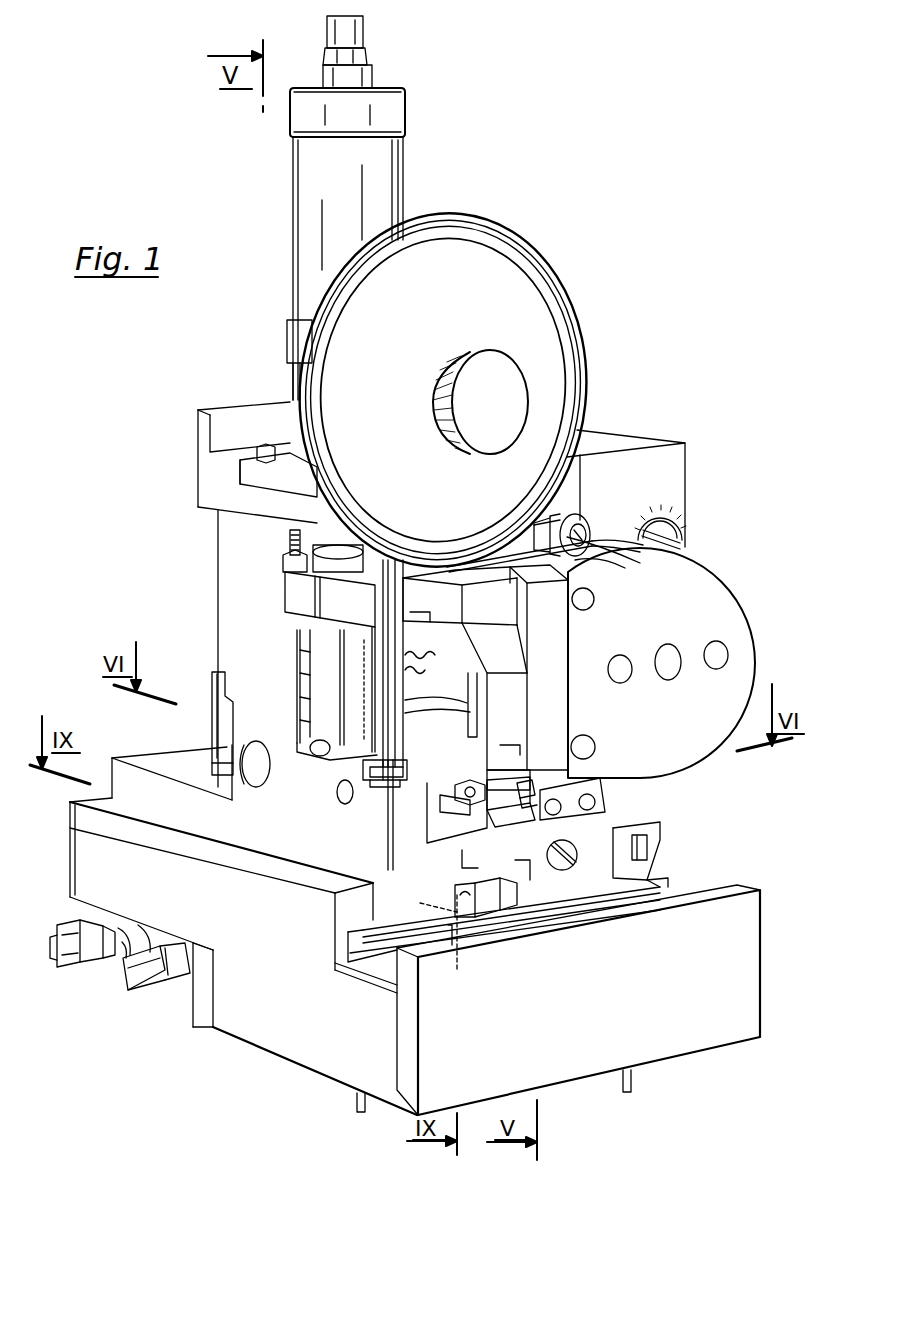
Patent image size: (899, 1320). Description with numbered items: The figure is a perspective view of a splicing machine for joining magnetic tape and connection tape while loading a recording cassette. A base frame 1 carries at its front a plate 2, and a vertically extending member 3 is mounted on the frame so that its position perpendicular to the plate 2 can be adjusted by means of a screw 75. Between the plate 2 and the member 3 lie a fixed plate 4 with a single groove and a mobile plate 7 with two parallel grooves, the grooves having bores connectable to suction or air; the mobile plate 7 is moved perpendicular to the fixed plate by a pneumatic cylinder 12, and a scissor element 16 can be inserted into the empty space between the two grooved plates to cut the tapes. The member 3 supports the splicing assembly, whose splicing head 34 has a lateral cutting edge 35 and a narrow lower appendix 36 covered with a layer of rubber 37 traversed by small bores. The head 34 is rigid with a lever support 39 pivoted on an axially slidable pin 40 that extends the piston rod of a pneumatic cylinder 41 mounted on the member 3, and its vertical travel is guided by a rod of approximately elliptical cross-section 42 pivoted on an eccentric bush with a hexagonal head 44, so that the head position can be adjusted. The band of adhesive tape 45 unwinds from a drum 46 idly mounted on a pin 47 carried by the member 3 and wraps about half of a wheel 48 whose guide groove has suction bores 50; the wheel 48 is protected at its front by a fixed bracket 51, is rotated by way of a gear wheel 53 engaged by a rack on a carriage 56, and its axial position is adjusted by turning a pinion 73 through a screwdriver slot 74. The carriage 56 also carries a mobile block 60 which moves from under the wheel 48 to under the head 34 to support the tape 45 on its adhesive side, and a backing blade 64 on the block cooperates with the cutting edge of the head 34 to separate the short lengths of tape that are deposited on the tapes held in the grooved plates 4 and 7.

The base frame 1 is at (325, 1062).
The plate 2 is at (745, 958).
The vertically extending member 3 is at (233, 563).
The fixed plate 4 is at (667, 890).
The mobile plate 7 is at (362, 978).
The pneumatic cylinder 12 is at (120, 985).
The scissor element 16 is at (458, 898).
The splicing head 34 is at (530, 693).
The lateral cutting edge 35 is at (525, 795).
The narrow lower appendix 36 is at (492, 778).
The layer of rubber 37 is at (500, 790).
The lever support 39 is at (503, 600).
The axially slidable pin 40 is at (330, 676).
The pneumatic cylinder 41 is at (387, 170).
The rod of approximately elliptical cross-section 42 is at (395, 648).
The hexagonal head 44 is at (380, 782).
The band of adhesive tape 45 is at (500, 237).
The drum 46 is at (548, 315).
The pin 47 is at (515, 405).
The wheel 48 is at (611, 552).
The bores 50 is at (583, 562).
The fixed bracket 51 is at (725, 585).
The gear wheel 53 is at (417, 680).
The carriage 56 is at (512, 812).
The mobile block 60 is at (566, 823).
The backing blade 64 is at (572, 792).
The pinion 73 is at (680, 520).
The screwdriver slot 74 is at (686, 548).
The screw 75 is at (562, 866).